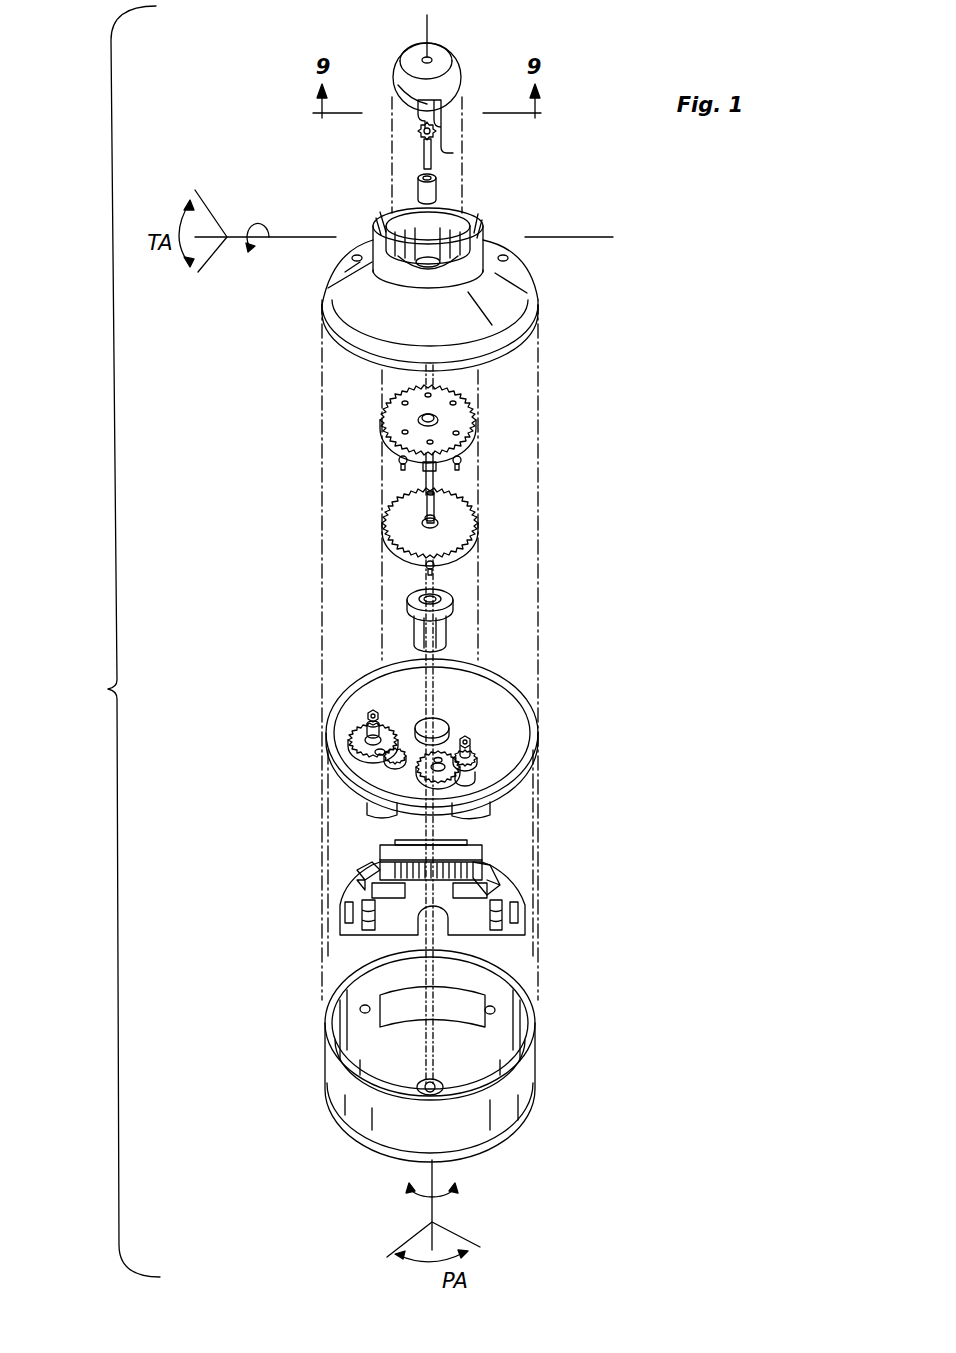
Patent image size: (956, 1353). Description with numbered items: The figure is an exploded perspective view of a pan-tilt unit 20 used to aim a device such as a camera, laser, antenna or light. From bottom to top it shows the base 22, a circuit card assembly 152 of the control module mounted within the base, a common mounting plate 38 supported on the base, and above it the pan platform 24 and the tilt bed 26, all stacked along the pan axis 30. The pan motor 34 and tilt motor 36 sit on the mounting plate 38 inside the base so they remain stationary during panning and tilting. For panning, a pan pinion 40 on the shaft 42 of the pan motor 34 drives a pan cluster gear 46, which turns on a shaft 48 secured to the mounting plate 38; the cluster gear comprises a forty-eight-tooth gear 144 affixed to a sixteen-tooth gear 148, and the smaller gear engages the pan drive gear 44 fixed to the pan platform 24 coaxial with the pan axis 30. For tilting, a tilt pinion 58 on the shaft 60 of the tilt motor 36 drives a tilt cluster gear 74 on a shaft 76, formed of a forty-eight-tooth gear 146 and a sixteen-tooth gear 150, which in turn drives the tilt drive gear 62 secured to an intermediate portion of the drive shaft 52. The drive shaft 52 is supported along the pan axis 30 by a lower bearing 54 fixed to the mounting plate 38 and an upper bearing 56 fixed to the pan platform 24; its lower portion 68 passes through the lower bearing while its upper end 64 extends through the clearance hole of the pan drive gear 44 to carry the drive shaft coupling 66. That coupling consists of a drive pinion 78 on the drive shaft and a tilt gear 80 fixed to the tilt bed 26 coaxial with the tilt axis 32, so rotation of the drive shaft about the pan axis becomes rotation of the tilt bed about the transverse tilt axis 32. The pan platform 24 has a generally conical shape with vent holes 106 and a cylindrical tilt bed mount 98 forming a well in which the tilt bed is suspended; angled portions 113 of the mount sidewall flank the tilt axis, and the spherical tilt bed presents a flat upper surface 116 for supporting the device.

The pan-tilt unit 20 is at (108, 689).
The base 22 is at (538, 1029).
The pan platform 24 is at (543, 280).
The tilt bed 26 is at (437, 45).
The pan axis 30 is at (424, 38).
The tilt axis 32 is at (577, 236).
The pan motor 34 is at (378, 805).
The tilt motor 36 is at (495, 806).
The mounting plate 38 is at (523, 717).
The pan pinion 40 is at (400, 763).
The shaft of the pan motor 42 is at (385, 758).
The pan drive gear 44 is at (478, 419).
The pan cluster gear 46 is at (350, 740).
The shaft 48 is at (368, 714).
The drive shaft 52 is at (416, 518).
The lower bearing 54 is at (448, 630).
The upper bearing 56 is at (438, 186).
The tilt pinion 58 is at (480, 753).
The shaft of the tilt motor 60 is at (470, 745).
The tilt drive gear 62 is at (480, 522).
The upper end of the drive shaft 64 is at (437, 503).
The drive shaft coupling 66 is at (452, 150).
The lower portion of the drive shaft 68 is at (425, 568).
The tilt cluster gear 74 is at (452, 795).
The shaft 76 is at (425, 768).
The drive pinion 78 is at (418, 136).
The tilt gear 80 is at (417, 110).
The tilt bed mount 98 is at (384, 211).
The vent holes 106 is at (372, 250).
The angled portions of the sidewall 113 is at (403, 263).
The flat upper surface 116 is at (440, 57).
The 48-tooth gear 144 is at (363, 749).
The 48-tooth gear 146 is at (463, 775).
The 16-tooth gear 148 is at (367, 729).
The 16-tooth gear 150 is at (478, 761).
The circuit card assembly 152 is at (523, 889).